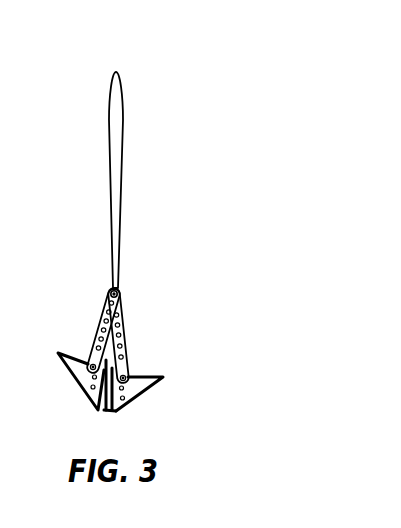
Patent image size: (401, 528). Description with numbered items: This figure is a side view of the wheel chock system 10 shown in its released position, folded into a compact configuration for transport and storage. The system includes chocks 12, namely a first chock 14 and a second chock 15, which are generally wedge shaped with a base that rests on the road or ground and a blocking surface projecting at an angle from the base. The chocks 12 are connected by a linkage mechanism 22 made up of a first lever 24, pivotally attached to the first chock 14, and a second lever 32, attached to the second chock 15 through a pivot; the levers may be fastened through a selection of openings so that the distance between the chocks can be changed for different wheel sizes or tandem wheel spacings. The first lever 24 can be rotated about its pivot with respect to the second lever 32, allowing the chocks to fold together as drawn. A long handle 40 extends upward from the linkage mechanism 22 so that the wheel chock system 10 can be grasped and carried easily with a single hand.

The wheel chock system 10 is at (176, 81).
The handle 40 is at (123, 163).
The linkage mechanism 22 is at (128, 327).
The first lever 24 is at (96, 345).
The second lever 32 is at (128, 363).
The first chock 14 is at (78, 380).
The chocks 12 is at (143, 393).
The second chock 15 is at (130, 408).